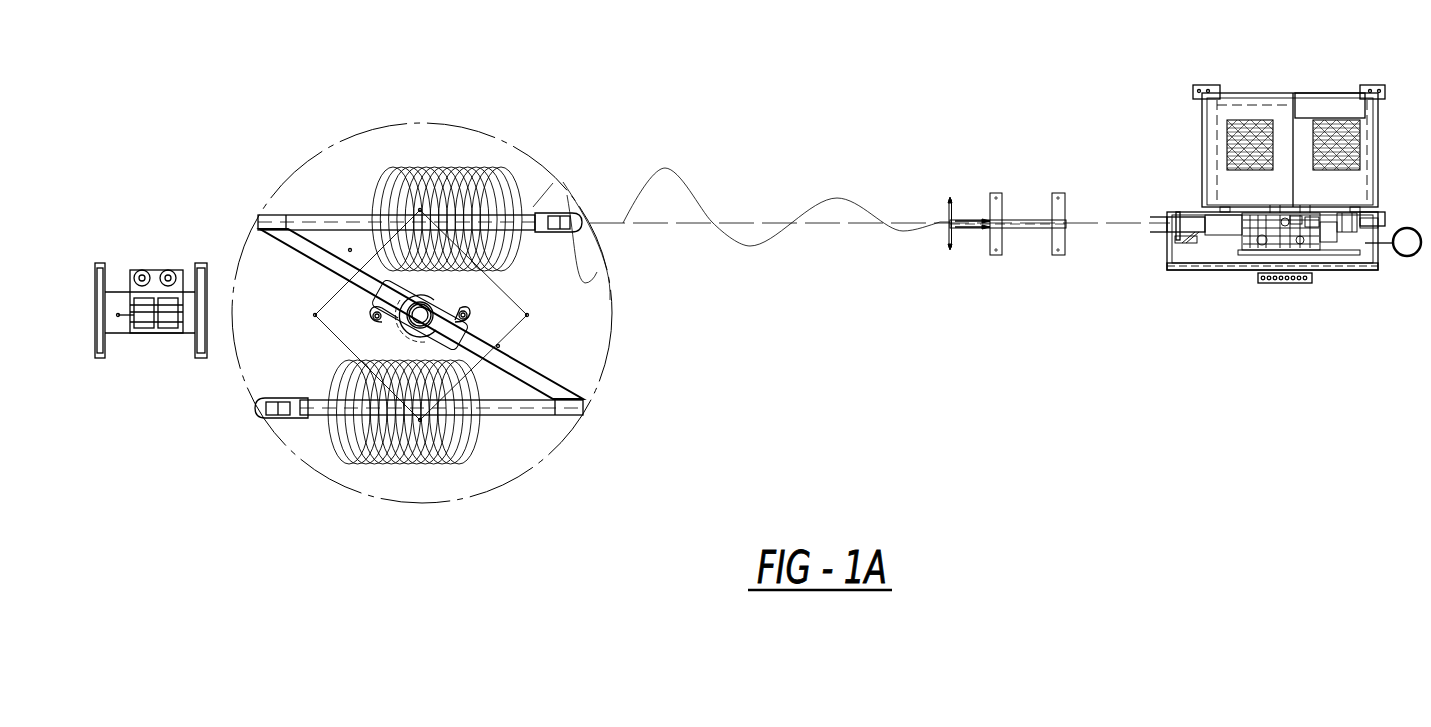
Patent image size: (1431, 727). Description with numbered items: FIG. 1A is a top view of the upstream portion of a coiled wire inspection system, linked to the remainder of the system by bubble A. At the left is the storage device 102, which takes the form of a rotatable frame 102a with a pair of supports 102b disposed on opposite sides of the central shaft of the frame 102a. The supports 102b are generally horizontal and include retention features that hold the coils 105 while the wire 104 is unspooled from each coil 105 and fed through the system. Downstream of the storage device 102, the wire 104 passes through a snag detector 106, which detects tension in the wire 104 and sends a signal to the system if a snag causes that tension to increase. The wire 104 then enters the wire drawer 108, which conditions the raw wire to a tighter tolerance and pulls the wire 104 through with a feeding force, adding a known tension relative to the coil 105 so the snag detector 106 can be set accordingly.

The storage device 102 is at (216, 142).
The rotatable frame 102a is at (517, 301).
The supports 102b is at (330, 214).
The wire 104 is at (683, 178).
The coil 105 is at (442, 170).
The snag detector 106 is at (1029, 217).
The wire drawer 108 is at (1215, 273).